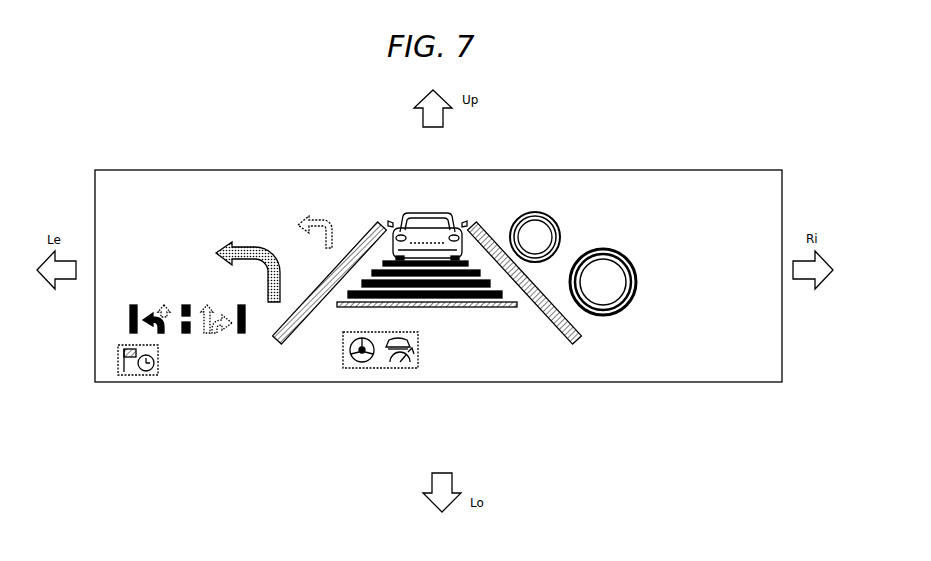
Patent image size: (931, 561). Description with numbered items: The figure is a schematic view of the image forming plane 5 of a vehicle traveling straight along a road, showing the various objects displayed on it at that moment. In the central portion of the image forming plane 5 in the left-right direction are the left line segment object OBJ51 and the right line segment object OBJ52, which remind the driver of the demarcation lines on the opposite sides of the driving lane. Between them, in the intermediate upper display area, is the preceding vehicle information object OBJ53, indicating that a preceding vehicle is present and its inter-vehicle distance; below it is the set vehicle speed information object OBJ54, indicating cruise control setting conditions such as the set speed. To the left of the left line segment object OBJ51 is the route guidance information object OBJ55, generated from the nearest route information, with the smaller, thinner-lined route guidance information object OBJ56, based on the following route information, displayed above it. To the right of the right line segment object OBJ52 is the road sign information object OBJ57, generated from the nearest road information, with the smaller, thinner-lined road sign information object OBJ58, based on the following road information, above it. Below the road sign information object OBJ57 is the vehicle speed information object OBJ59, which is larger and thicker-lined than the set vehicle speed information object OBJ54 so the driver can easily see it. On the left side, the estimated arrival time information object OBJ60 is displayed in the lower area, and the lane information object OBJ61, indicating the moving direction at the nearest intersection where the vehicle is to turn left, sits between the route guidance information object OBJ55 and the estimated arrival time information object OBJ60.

The image forming plane 5 is at (122, 170).
The left line segment object OBJ51 is at (284, 336).
The right line segment object OBJ52 is at (562, 340).
The preceding vehicle information object OBJ53 is at (448, 208).
The set vehicle speed information object OBJ54 is at (456, 358).
The route guidance information object OBJ55 is at (230, 232).
The route guidance information object OBJ56 is at (311, 205).
The road sign information object OBJ57 is at (614, 248).
The road sign information object OBJ58 is at (547, 213).
The vehicle speed information object OBJ59 is at (672, 358).
The estimated arrival time information object OBJ60 is at (185, 376).
The lane information object OBJ61 is at (122, 317).